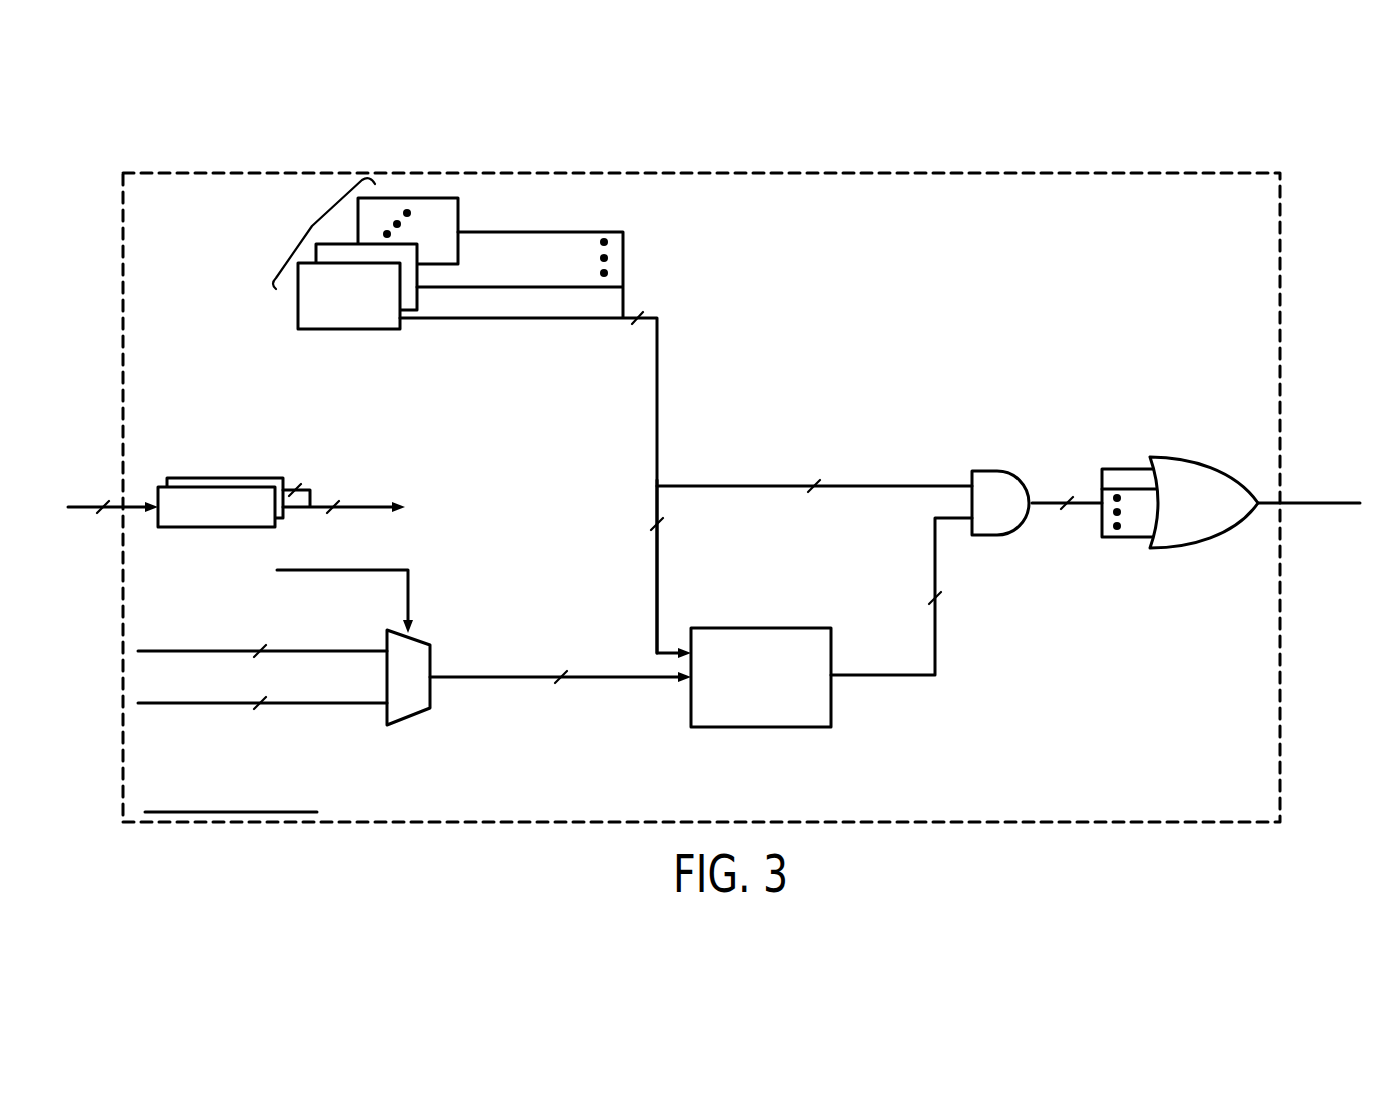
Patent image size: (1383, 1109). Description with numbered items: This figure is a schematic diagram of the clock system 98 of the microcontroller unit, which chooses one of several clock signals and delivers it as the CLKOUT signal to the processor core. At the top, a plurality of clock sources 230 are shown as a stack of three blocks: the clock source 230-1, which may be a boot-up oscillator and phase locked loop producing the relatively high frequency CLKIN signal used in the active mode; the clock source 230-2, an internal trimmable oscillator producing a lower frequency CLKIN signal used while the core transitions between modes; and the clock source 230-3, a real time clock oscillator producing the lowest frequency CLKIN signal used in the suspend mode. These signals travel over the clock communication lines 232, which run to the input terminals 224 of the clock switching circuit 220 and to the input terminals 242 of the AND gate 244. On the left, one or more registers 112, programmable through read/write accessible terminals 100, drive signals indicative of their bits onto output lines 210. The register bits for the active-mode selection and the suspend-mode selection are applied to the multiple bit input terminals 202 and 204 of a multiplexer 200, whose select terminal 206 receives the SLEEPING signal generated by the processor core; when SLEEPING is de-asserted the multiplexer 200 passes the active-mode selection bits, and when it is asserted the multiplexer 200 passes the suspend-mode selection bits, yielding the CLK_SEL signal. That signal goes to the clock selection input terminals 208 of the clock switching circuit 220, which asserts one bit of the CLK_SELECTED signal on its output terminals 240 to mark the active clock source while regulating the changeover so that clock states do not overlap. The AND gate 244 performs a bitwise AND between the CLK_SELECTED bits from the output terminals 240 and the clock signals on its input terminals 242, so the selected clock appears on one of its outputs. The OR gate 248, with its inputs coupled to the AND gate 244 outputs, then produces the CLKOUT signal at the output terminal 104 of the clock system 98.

The clock system 98 is at (1250, 153).
The read/write accessible terminals 100 is at (112, 510).
The output terminal 104 is at (1310, 505).
The registers 112 is at (141, 496).
The multiplexer 200 is at (410, 720).
The multiple bit input terminals 202 is at (333, 651).
The multiple bit input terminals 204 is at (333, 704).
The select terminal 206 is at (412, 596).
The clock selection input terminals 208 is at (606, 679).
The output lines 210 is at (357, 505).
The clock switching circuit 220 is at (760, 628).
The input terminals 224 is at (656, 575).
The clock sources 230 is at (312, 228).
The clock source 230-1 is at (298, 307).
The clock source 230-2 is at (418, 297).
The clock source 230-3 is at (408, 198).
The clock communication lines 232 is at (659, 375).
The output terminals 240 is at (937, 647).
The input terminals 242 is at (850, 486).
The AND gate 244 is at (997, 470).
The OR gate 248 is at (1165, 458).